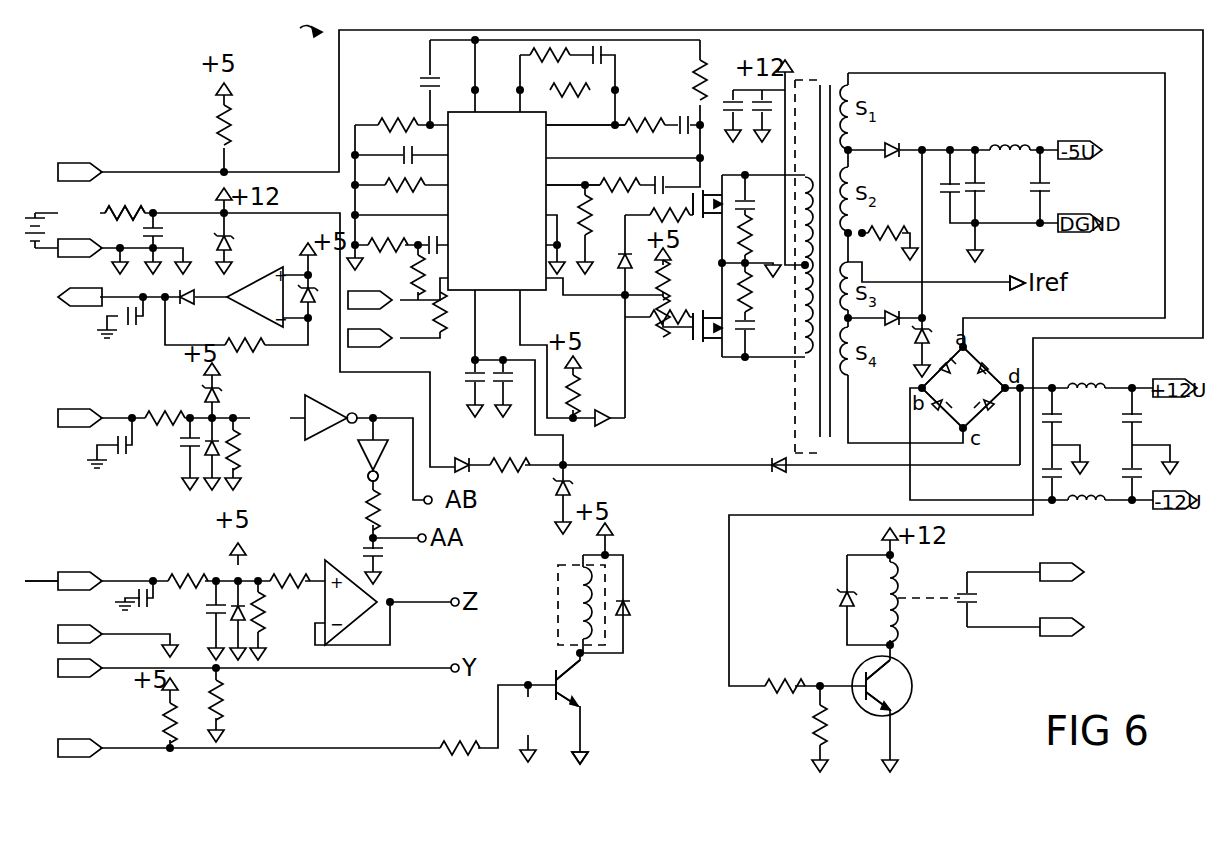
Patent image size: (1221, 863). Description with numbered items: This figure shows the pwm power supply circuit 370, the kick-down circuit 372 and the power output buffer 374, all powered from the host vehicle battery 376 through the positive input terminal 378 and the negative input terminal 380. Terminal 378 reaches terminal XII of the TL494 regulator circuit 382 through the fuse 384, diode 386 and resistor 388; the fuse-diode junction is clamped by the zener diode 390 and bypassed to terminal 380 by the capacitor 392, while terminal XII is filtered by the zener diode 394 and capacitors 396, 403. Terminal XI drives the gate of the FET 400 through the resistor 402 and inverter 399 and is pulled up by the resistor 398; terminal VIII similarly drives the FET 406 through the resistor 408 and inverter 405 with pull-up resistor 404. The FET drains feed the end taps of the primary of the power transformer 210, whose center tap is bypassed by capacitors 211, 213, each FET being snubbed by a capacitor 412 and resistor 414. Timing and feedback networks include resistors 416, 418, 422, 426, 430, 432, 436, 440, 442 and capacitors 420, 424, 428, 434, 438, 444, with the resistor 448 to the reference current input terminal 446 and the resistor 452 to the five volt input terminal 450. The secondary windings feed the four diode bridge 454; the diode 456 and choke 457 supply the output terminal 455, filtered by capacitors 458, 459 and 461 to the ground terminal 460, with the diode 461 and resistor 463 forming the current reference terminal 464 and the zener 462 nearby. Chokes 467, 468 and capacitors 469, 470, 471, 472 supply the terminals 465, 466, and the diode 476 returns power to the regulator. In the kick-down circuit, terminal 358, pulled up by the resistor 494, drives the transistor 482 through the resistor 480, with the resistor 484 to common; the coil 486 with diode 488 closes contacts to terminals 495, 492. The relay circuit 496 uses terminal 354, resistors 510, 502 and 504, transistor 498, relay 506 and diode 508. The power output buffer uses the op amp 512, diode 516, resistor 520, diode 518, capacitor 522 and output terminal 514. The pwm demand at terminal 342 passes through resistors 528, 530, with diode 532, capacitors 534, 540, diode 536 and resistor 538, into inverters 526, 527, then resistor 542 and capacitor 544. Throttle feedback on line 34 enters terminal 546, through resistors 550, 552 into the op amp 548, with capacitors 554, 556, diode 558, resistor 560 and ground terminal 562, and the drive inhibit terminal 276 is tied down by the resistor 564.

The pwm power supply circuit 370 is at (278, 22).
The terminal 358 is at (72, 168).
The host vehicle battery 376 is at (33, 213).
The 100k ohm resistor 494 is at (232, 128).
The positive input terminal 378 is at (112, 207).
The fuse 384 is at (150, 205).
The 0.001 microfarad capacitor 392 is at (163, 232).
The zener diode 390 is at (232, 240).
The negative input terminal 380 is at (80, 254).
The output terminal 514 is at (70, 297).
The capacitor 522 is at (122, 308).
The forward biased diode 516 is at (185, 305).
The op amp 512 is at (255, 310).
The 1k ohm resistor 520 is at (250, 350).
The diode 518 is at (315, 298).
The power output buffer 374 is at (160, 345).
The terminal 342 is at (78, 412).
The 1k ohm resistor 528 is at (165, 412).
The diode 532 is at (220, 395).
The 1k ohm resistor 530 is at (300, 390).
The capacitor 540 is at (118, 436).
The 0.001 microfarad capacitor 534 is at (180, 445).
The diode 536 is at (208, 455).
The 100k ohm resistor 538 is at (240, 450).
The logic inverter 526 is at (358, 460).
The inverter 527 is at (366, 482).
The 5.1k ohm resistor 542 is at (366, 510).
The 1 microfarad capacitor 544 is at (362, 555).
The line 34 is at (32, 581).
The terminal 546 is at (72, 578).
The 1k ohm resistor 550 is at (185, 575).
The 1k ohm resistor 552 is at (288, 576).
The op amp 548 is at (370, 590).
The capacitor 554 is at (140, 590).
The 0.001 microfarad capacitor 556 is at (206, 612).
The 100k ohm resistor 560 is at (265, 605).
The diode 558 is at (245, 615).
The circuit common ground terminal 562 is at (66, 632).
The terminal 276 is at (58, 666).
The 100k ohm resistor 564 is at (222, 700).
The 100k ohm resistor 510 is at (165, 710).
The terminal 354 is at (70, 746).
The 2k ohm resistor 502 is at (458, 742).
The transistor 498 is at (556, 675).
The relay 506 is at (575, 585).
The reverse biased diode 508 is at (632, 605).
The 1k ohm resistor 504 is at (540, 710).
The relay circuit 496 is at (628, 678).
The TL494 regulator circuit 382 is at (495, 195).
The 10.0 microfarad electrolytic capacitor 428 is at (426, 80).
The 10k ohm resistor 436 is at (398, 120).
The 20k ohm resistor 432 is at (540, 58).
The 680 PF capacitor 434 is at (605, 50).
The 47k ohm resistor 430 is at (556, 95).
The 100 picofarad capacitor 424 is at (648, 120).
The 20k ohm resistor 422 is at (615, 128).
The 0.01 microfarad capacitor 438 is at (406, 152).
The 2k ohm precision resistor 440 is at (408, 188).
The 1k ohm resistor 442 is at (385, 242).
The 0.1 microfarad capacitor 444 is at (433, 240).
The 1k ohm resistor 448 is at (412, 265).
The reference current input terminal 446 is at (395, 300).
The 4.7k ohm resistor 452 is at (436, 310).
The +5 v input terminal 450 is at (395, 342).
The 15 microfarad electrolytic capacitor 396 is at (465, 375).
The capacitor 403 is at (512, 380).
The diode 386 is at (470, 450).
The resistor 388 is at (515, 470).
The zener diode 394 is at (558, 488).
The 1k ohm resistor 398 is at (580, 380).
The inverter 399 is at (605, 425).
The resistor 402 is at (655, 330).
The inverter 405 is at (620, 265).
The 20k ohm resistor 418 is at (598, 183).
The 1.0 microfarad capacitor 420 is at (658, 182).
The 200 ohm resistor 416 is at (582, 222).
The resistor 426 is at (706, 85).
The 15 microfarad electrolytic capacitor 211 is at (733, 112).
The FET 406 is at (700, 205).
The 0.1 microfarad capacitor 213 is at (765, 112).
The resistor 408 is at (703, 216).
The capacitor 412 is at (755, 205).
The resistor 414 is at (752, 235).
The 1k ohm resistor 404 is at (680, 305).
The FET 400 is at (703, 345).
The diode 476 is at (778, 458).
The power transformer 210 is at (812, 85).
The diode 456 is at (895, 145).
The 10 microhenry choke 457 is at (1002, 146).
The +5 vdc voltage source output terminal 455 is at (1075, 140).
The diode 461 is at (1050, 190).
The 470 microfarad electrolytic capacitor 459 is at (985, 190).
The ground terminal 460 is at (1090, 235).
The 0.2 ohm resistor 463 is at (900, 218).
The 0.1 microfarad capacitor 458 is at (948, 195).
The current reference terminal 464 is at (1000, 270).
The zener diode 462 is at (930, 332).
The four diode bridge 454 is at (975, 355).
The 150 microhenry choke 467 is at (1085, 383).
The +12 vdc power supply source terminal 465 is at (1172, 378).
The 15 microfarad electrolytic capacitor 469 is at (1062, 420).
The 1 microfarad electrolytic capacitor 471 is at (1142, 420).
The 15 microfarad electrolytic capacitor 470 is at (1062, 478).
The 1 microfarad electrolytic capacitor 472 is at (1142, 478).
The 150 microhenry choke 468 is at (1078, 502).
The -12 vdc power supply source terminal 466 is at (1160, 512).
The diode 488 is at (838, 598).
The relay coil 486 is at (900, 600).
The 2k ohm resistor 480 is at (772, 680).
The transistor 482 is at (890, 678).
The 1k ohm resistor 484 is at (815, 718).
The kick-down circuit 372 is at (925, 685).
The connector 495 is at (1085, 570).
The terminal 492 is at (1085, 625).